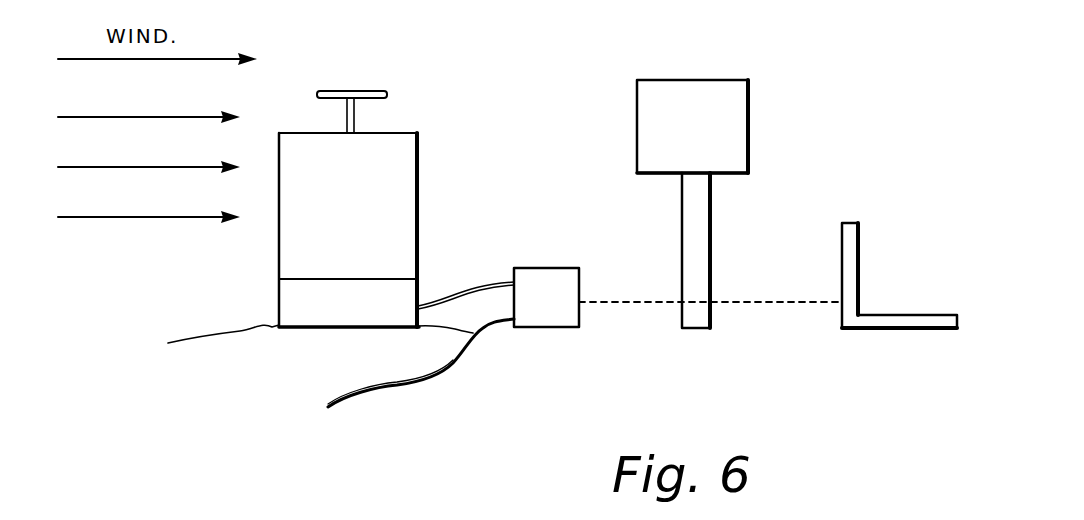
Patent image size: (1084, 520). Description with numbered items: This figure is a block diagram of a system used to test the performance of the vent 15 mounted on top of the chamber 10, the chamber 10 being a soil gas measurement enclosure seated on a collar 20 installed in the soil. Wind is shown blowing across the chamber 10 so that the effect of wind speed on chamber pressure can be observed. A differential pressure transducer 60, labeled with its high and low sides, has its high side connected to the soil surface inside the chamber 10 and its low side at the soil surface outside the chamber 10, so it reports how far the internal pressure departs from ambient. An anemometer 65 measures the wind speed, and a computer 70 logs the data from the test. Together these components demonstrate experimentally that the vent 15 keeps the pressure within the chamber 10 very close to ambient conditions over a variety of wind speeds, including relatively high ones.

The chamber 10 is at (418, 188).
The vent 15 is at (351, 78).
The collar 20 is at (311, 312).
The differential pressure transducer 60 is at (553, 282).
The anemometer 65 is at (695, 120).
The computer 70 is at (868, 277).